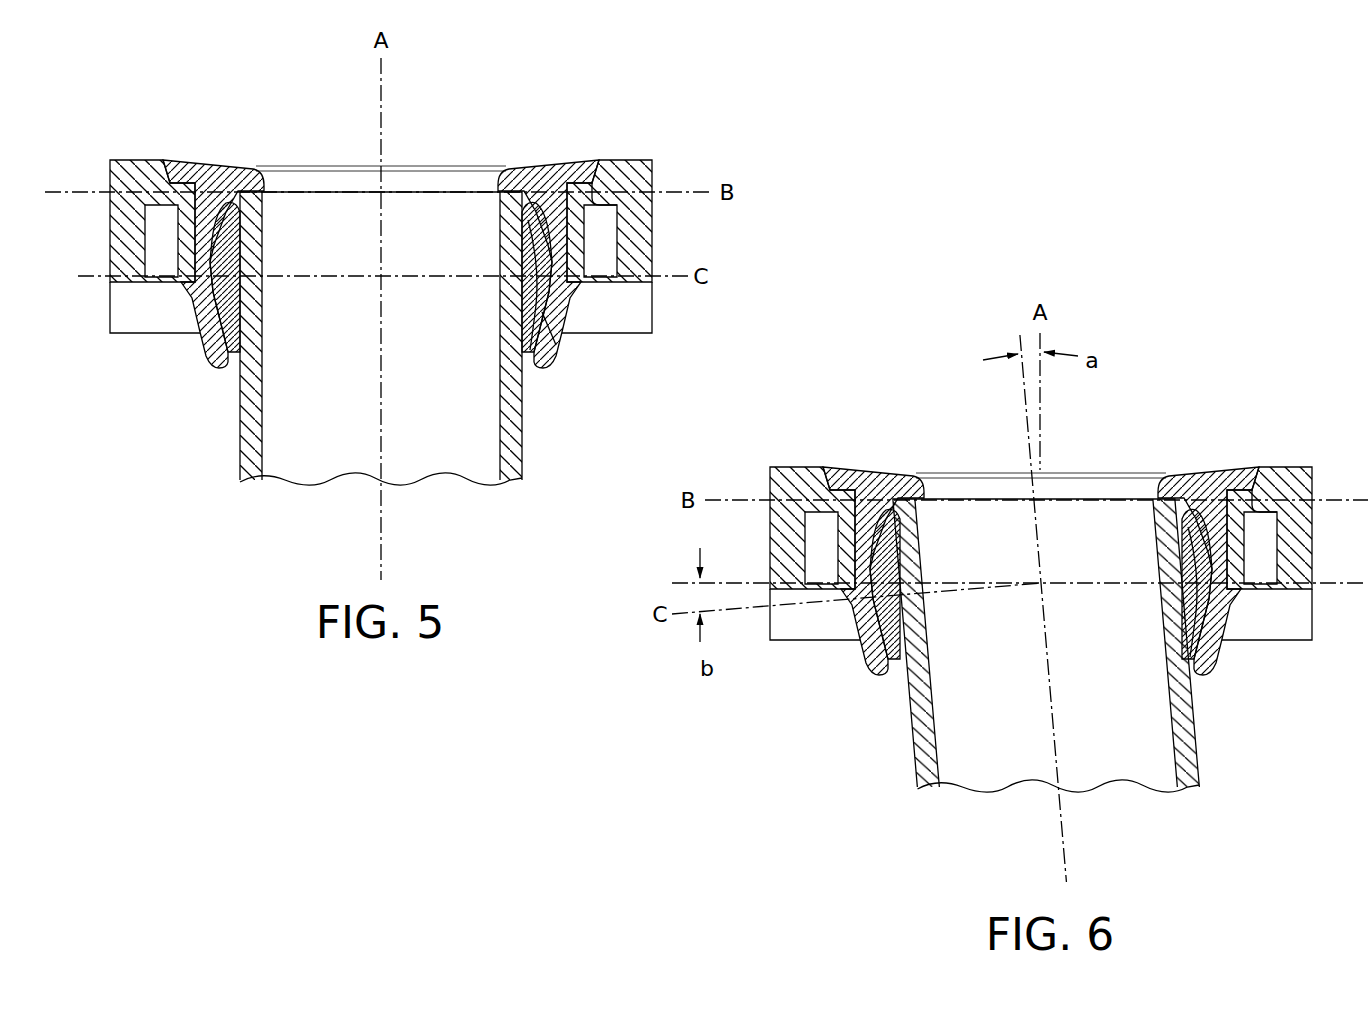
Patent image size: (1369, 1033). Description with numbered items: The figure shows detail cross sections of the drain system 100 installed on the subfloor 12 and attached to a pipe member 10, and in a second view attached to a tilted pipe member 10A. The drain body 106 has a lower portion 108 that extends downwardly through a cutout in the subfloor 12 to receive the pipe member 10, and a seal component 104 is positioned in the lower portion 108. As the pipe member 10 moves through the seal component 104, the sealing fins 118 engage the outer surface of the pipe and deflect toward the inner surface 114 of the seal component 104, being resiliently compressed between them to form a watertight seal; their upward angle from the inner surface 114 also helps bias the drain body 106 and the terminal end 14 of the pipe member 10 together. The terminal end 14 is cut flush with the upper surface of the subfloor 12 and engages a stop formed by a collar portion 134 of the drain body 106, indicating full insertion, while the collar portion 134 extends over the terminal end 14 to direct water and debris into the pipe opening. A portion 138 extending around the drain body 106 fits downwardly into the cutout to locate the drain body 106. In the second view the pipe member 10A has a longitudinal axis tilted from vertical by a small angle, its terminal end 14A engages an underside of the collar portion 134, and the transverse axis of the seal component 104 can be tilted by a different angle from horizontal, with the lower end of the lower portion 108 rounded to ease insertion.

In FIG. 5, the pipe member 10 is at (241, 455).
In FIG. 6, the pipe member 10A is at (907, 755).
In FIG. 5, the subfloor 12 is at (138, 320).
In FIG. 5, the terminal end 14 is at (252, 166).
In FIG. 6, the terminal end 14A is at (898, 472).
In FIG. 5, the drain system 100 is at (606, 106).
In FIG. 6, the drain system 100 is at (1186, 350).
In FIG. 5, the seal component 104 is at (555, 330).
In FIG. 6, the seal component 104 is at (1214, 626).
In FIG. 5, the drain body 106 is at (138, 154).
In FIG. 6, the drain body 106 is at (1238, 452).
In FIG. 5, the lower portion 108 is at (206, 372).
In FIG. 6, the lower portion 108 is at (867, 652).
In FIG. 5, the inner surface 114 is at (549, 332).
In FIG. 5, the sealing fins 118 is at (514, 285).
In FIG. 6, the sealing fins 118 is at (1165, 585).
In FIG. 5, the collar portion 134 is at (512, 166).
In FIG. 6, the collar portion 134 is at (1172, 478).
In FIG. 5, the portion 138 is at (606, 208).